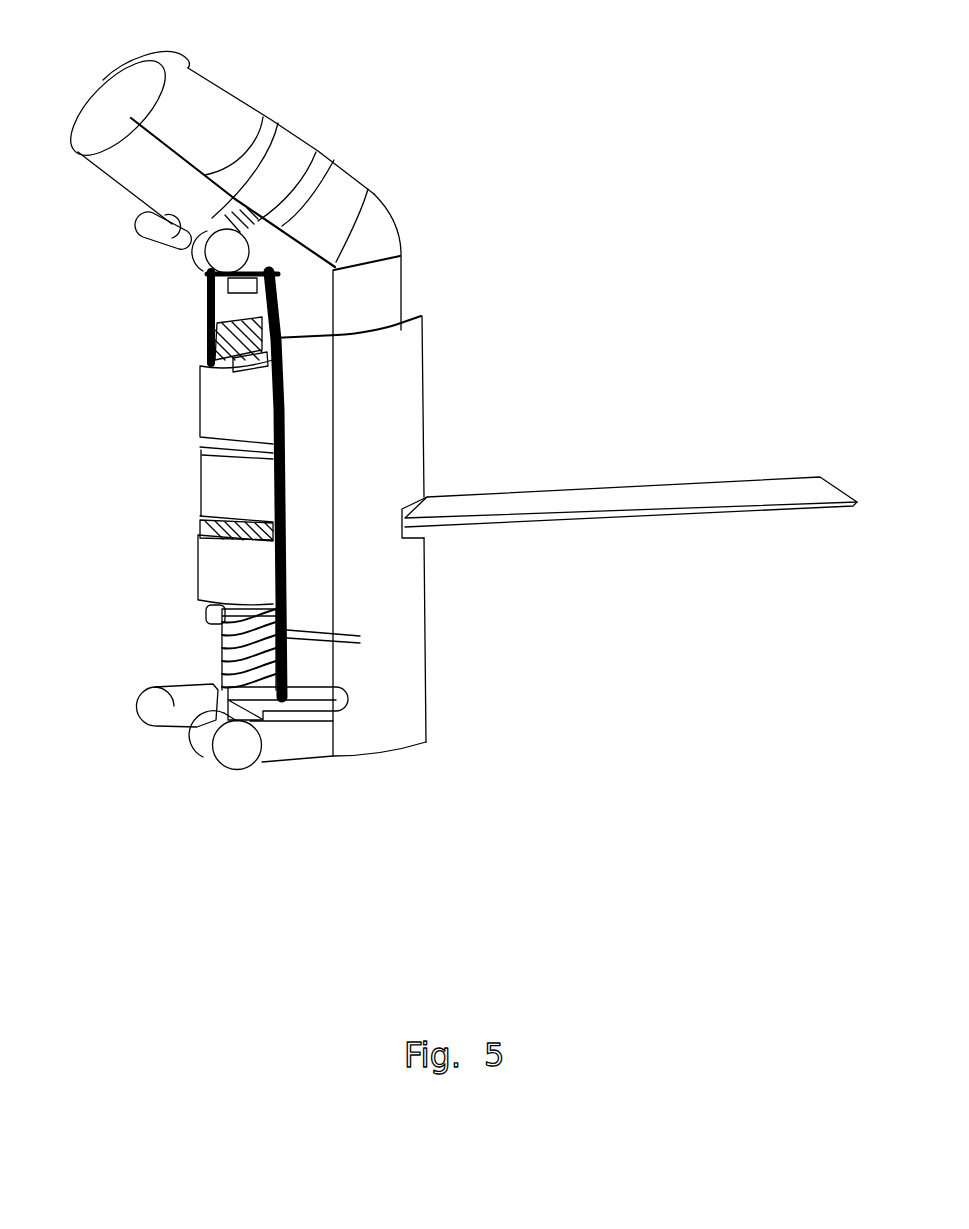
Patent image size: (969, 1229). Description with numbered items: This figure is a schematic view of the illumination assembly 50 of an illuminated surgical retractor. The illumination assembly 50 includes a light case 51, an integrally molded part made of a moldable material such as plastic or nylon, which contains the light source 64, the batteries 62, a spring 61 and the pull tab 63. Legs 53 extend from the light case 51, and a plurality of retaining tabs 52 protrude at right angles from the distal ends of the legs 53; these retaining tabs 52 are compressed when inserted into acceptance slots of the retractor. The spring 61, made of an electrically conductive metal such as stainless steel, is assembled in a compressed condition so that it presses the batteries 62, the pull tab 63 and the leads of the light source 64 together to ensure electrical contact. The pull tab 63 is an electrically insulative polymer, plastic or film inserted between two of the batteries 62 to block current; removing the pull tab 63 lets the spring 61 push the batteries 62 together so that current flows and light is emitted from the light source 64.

The illumination assembly 50 is at (456, 615).
The light case 51 is at (425, 703).
The retaining tabs 52 is at (137, 217).
The legs 53 is at (262, 247).
The spring 61 is at (218, 655).
The batteries 62 is at (205, 413).
The pull tab 63 is at (707, 500).
The light source 64 is at (98, 82).